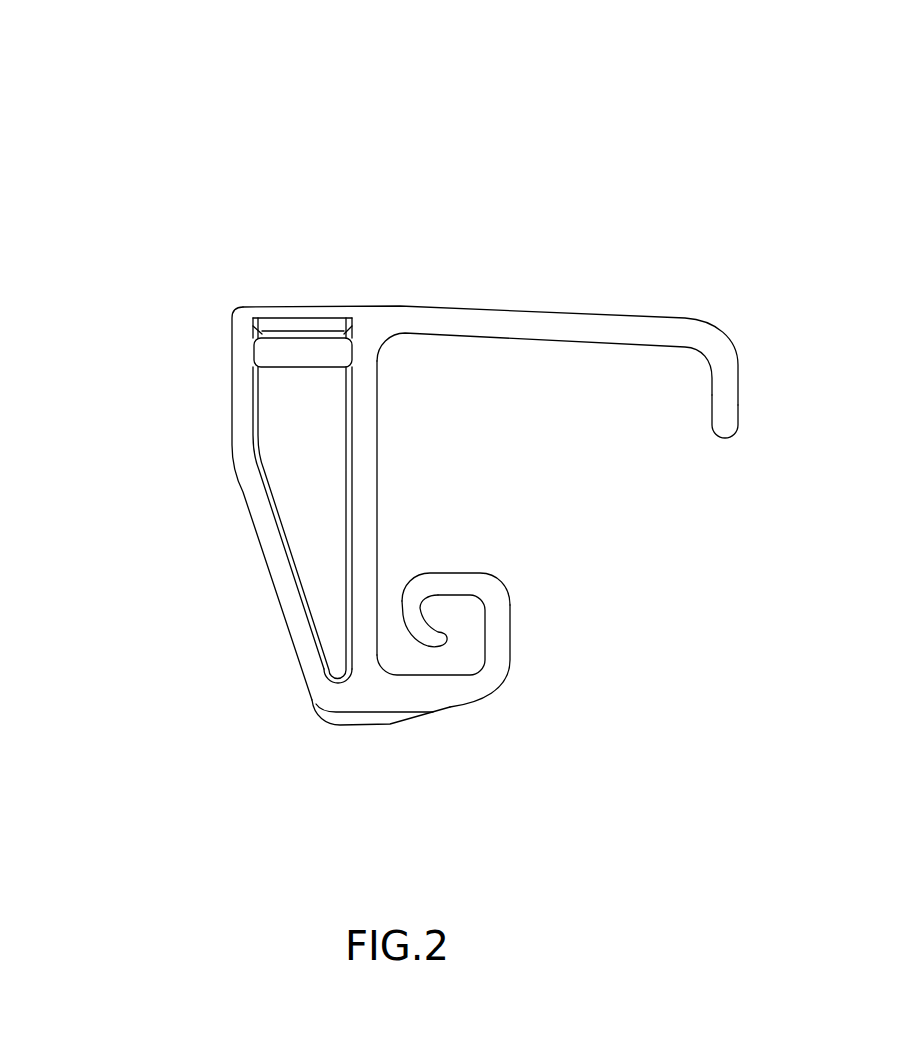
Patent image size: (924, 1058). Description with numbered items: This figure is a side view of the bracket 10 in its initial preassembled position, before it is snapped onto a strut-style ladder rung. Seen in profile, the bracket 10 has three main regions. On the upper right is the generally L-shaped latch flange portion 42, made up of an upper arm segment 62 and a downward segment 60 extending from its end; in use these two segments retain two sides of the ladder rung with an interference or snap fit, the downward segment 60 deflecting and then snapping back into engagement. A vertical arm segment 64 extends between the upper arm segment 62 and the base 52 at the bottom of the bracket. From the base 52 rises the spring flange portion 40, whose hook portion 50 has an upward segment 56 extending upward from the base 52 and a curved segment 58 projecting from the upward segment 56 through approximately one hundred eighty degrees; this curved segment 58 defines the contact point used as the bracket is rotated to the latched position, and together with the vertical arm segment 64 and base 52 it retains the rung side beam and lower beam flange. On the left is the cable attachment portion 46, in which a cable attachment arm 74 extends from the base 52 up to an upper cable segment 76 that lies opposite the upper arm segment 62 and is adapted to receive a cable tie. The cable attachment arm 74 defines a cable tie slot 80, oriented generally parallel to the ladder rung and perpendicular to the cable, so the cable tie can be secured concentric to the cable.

The bracket 10 is at (793, 100).
The spring flange portion 40 is at (490, 580).
The latch flange portion 42 is at (627, 317).
The cable attachment portion 46 is at (293, 342).
The hook portion 50 is at (423, 592).
The base 52 is at (441, 697).
The upward segment 56 is at (502, 645).
The curved segment 58 is at (415, 613).
The downward segment 60 is at (722, 412).
The upper arm segment 62 is at (500, 323).
The vertical arm segment 64 is at (378, 418).
The cable attachment arm 74 is at (243, 393).
The upper cable segment 76 is at (322, 312).
The cable tie slot 80 is at (313, 505).